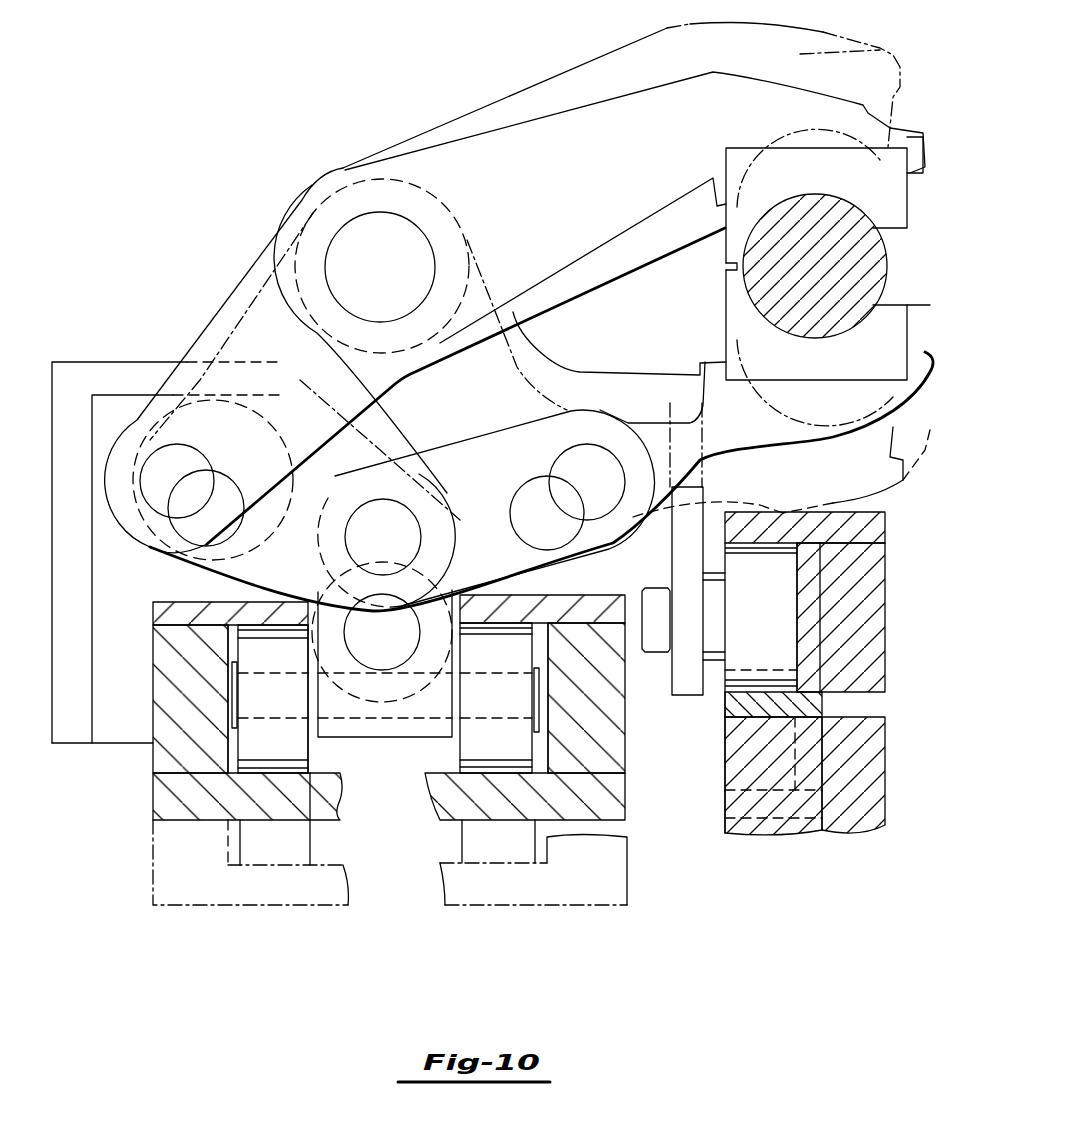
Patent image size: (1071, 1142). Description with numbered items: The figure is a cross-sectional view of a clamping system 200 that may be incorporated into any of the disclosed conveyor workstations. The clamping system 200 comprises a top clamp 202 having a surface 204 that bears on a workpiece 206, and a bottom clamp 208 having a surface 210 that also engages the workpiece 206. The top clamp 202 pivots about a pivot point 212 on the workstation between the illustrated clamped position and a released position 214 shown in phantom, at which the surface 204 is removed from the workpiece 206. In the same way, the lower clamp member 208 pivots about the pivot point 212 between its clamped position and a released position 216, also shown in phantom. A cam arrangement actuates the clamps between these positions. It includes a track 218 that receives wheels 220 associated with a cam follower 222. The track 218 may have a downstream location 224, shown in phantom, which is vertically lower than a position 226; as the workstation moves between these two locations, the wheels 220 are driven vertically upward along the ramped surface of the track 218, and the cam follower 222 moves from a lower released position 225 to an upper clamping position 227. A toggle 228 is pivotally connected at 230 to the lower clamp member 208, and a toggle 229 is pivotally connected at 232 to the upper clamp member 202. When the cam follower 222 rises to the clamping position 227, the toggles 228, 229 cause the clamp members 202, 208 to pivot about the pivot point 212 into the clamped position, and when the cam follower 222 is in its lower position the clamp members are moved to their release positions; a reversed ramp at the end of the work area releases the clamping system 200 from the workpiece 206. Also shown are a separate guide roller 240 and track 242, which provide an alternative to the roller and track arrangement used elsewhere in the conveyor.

The clamping system 200 is at (208, 256).
The top clamp 202 is at (537, 150).
The surface 204 is at (875, 178).
The workpiece 206 is at (768, 283).
The bottom clamp 208 is at (518, 336).
The surface 210 is at (880, 364).
The pivot point 212 is at (373, 237).
The released position 214 is at (863, 100).
The released position 216 is at (920, 470).
The track 218 is at (340, 770).
The wheels 220 is at (286, 711).
The cam follower 222 is at (328, 624).
The downstream location 224 is at (200, 893).
The lower released position 225 is at (400, 647).
The position 226 is at (158, 800).
The upper clamping position 227 is at (400, 534).
The toggle 228 is at (523, 444).
The toggle 229 is at (205, 578).
The pivotal connection 230 is at (618, 442).
The pivotal connection 232 is at (178, 485).
The guide roller 240 is at (782, 618).
The track 242 is at (732, 707).